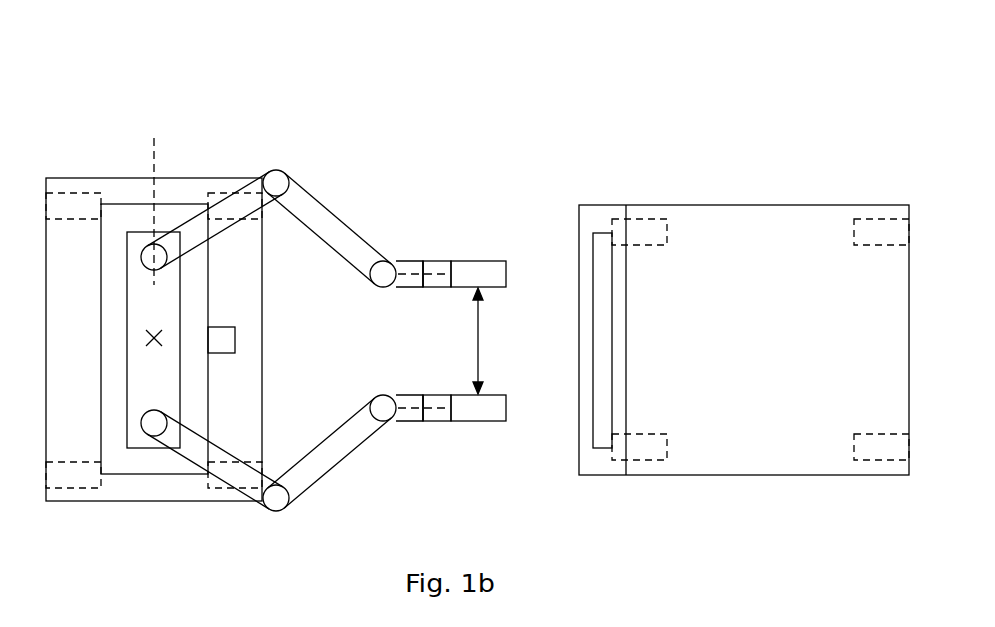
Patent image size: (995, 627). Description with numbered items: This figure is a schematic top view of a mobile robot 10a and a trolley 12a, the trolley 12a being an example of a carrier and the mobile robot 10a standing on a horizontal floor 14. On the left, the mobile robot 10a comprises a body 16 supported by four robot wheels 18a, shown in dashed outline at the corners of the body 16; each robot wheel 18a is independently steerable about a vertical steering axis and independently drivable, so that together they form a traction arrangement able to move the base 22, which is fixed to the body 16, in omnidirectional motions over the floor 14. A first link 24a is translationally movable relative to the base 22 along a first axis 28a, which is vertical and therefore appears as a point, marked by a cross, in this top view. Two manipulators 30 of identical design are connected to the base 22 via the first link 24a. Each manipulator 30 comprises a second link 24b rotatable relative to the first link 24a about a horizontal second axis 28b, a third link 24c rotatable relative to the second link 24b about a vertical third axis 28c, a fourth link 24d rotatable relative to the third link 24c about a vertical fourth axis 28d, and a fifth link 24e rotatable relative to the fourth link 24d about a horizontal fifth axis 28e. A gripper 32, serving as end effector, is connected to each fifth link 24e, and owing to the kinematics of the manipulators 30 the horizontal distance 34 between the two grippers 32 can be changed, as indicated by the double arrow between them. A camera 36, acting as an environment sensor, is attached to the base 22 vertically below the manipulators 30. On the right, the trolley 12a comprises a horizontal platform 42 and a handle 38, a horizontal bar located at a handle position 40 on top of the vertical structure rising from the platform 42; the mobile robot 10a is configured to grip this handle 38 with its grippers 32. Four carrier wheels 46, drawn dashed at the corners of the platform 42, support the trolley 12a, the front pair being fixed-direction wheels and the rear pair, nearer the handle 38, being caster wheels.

The mobile robot 10a is at (98, 104).
The trolley 12a is at (738, 156).
The floor 14 is at (492, 486).
The body 16 is at (91, 352).
The robot wheels 18a is at (73, 476).
The base 22 is at (117, 263).
The first link 24a is at (178, 394).
The second link 24b is at (188, 234).
The third link 24c is at (332, 228).
The fourth link 24d is at (410, 262).
The fifth link 24e is at (440, 262).
The first axis 28a is at (160, 340).
The second axis 28b is at (153, 168).
The third axis 28c is at (277, 183).
The fourth axis 28d is at (383, 280).
The fifth axis 28e is at (420, 282).
The manipulator 30 is at (411, 176).
The gripper 32 is at (490, 270).
The horizontal distance 34 is at (497, 341).
The camera 36 is at (236, 340).
The handle 38 is at (586, 323).
The handle position 40 is at (586, 378).
The platform 42 is at (846, 352).
The carrier wheels 46 is at (882, 235).